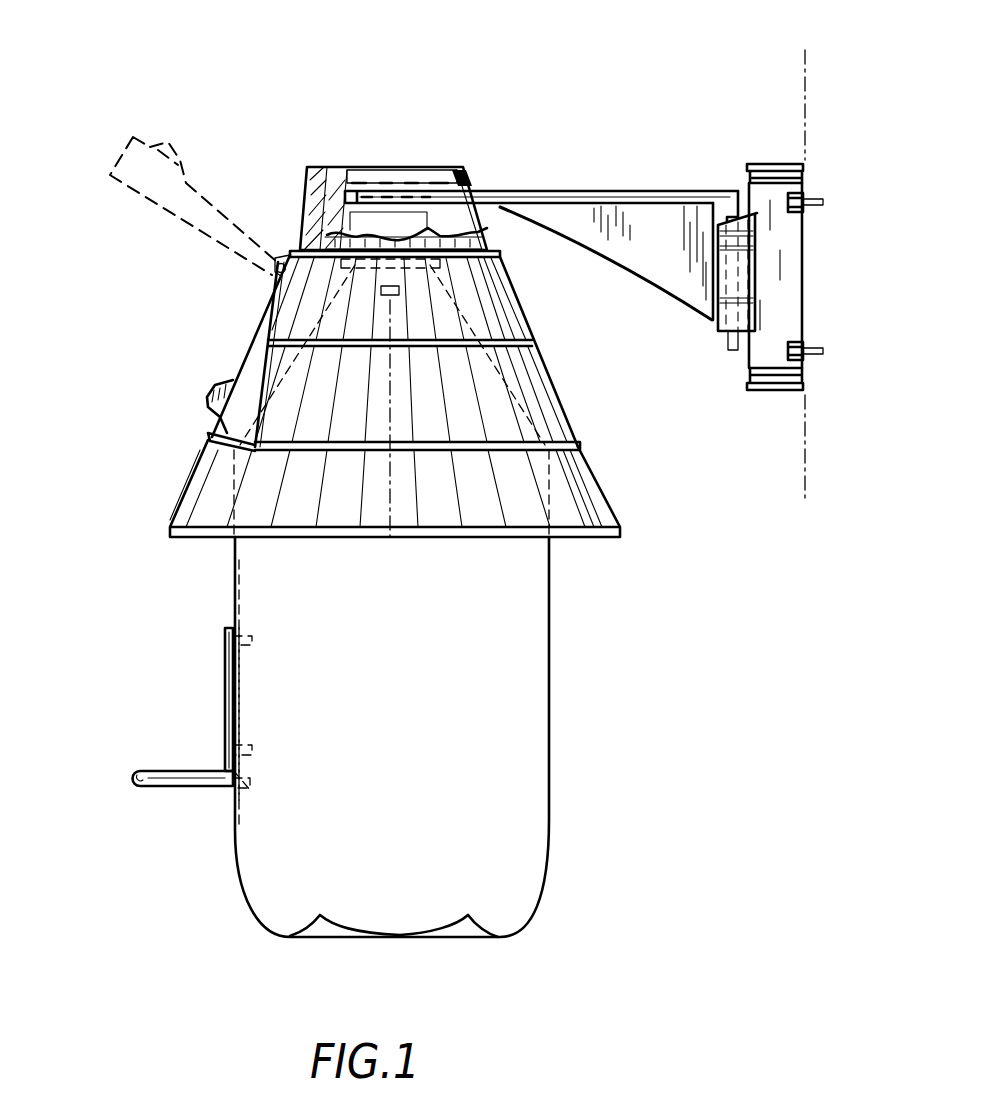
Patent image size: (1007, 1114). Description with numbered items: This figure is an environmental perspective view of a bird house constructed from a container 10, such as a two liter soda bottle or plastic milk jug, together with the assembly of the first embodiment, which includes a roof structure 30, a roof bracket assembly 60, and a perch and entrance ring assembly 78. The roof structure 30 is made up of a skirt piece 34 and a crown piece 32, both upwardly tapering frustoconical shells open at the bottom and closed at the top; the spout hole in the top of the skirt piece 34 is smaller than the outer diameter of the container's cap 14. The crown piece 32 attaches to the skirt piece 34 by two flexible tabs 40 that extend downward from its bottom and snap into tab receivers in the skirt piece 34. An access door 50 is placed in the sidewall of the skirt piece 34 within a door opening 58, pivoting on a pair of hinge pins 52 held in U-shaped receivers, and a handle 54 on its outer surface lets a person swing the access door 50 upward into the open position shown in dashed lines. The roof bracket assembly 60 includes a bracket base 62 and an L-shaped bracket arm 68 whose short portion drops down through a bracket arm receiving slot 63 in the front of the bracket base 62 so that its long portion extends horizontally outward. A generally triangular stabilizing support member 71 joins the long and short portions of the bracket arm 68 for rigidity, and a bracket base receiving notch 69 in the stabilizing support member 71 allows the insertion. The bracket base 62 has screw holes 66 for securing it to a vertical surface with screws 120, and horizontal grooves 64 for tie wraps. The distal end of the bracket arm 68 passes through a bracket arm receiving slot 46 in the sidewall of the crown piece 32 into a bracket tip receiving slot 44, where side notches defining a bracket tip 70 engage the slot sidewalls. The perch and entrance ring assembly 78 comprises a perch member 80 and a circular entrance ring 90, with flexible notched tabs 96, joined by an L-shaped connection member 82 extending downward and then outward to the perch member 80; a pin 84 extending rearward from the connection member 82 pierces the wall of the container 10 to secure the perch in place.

The container 10 is at (520, 740).
The cap 14 is at (367, 222).
The roof structure 30 is at (140, 318).
The crown piece 32 is at (333, 182).
The skirt piece 34 is at (205, 488).
The flexible tabs 40 is at (400, 296).
The bracket tip receiving slot 44 is at (432, 190).
The bracket arm receiving slot 46 is at (498, 212).
The access door 50 is at (258, 393).
The hinge pins 52 is at (280, 262).
The handle 54 is at (213, 398).
The door opening 58 is at (212, 430).
The roof bracket assembly 60 is at (643, 82).
The bracket base 62 is at (785, 300).
The bracket arm receiving slot 63 is at (728, 335).
The grooves 64 is at (790, 172).
The screw holes 66 is at (805, 215).
The bracket arm 68 is at (705, 190).
The bracket base receiving notch 69 is at (755, 205).
The bracket tip 70 is at (330, 182).
The stabilizing support member 71 is at (654, 260).
The perch and entrance ring assembly 78 is at (138, 884).
The perch member 80 is at (135, 768).
The connection member 82 is at (195, 771).
The pin 84 is at (240, 775).
The entrance ring 90 is at (225, 670).
The notched tabs 96 is at (252, 745).
The screws 120 is at (822, 200).